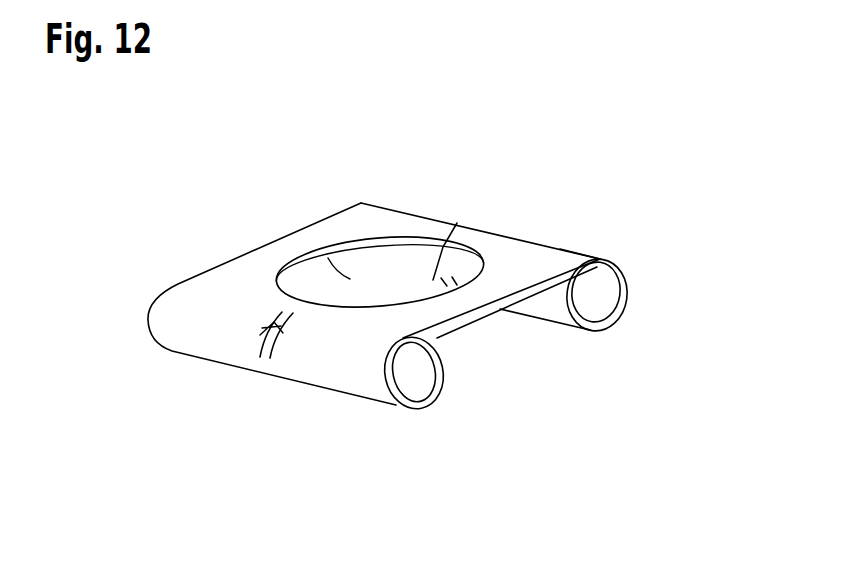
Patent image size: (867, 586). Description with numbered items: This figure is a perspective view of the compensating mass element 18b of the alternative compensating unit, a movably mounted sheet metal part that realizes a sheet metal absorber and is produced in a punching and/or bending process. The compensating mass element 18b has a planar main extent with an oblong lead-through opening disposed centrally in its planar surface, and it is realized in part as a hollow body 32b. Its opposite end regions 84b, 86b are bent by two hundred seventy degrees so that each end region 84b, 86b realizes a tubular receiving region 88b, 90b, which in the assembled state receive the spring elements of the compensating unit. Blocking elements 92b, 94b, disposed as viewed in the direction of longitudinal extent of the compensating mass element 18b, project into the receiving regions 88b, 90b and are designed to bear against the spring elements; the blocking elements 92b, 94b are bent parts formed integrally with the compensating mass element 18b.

The compensating mass element 18b is at (518, 263).
The hollow body 32b is at (586, 253).
The end region 84b is at (393, 390).
The end region 86b is at (628, 282).
The tubular receiving region 88b is at (418, 372).
The tubular receiving region 90b is at (593, 296).
The blocking element 92b is at (263, 333).
The blocking element 94b is at (468, 228).